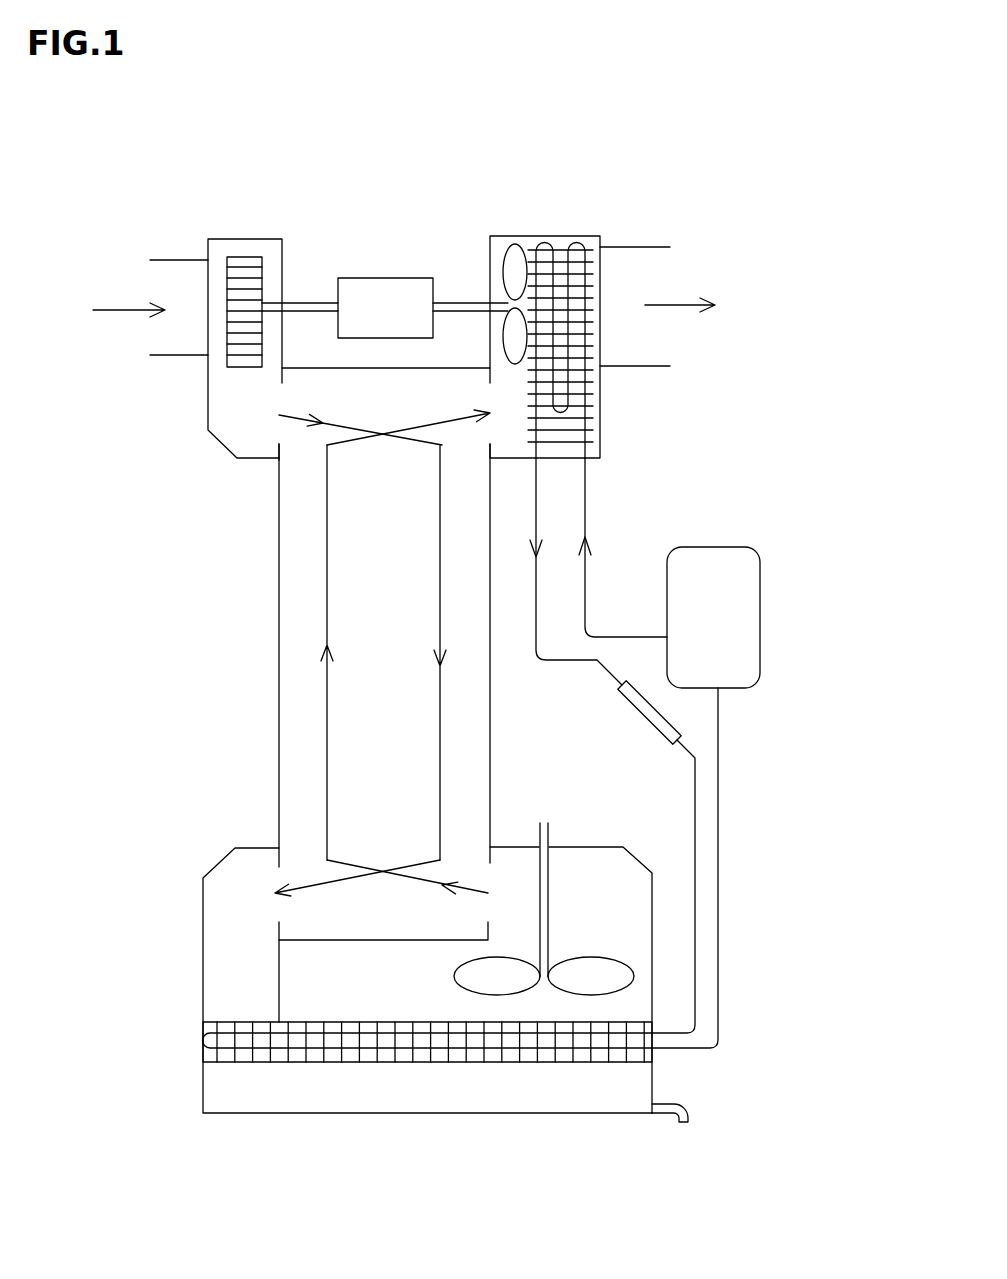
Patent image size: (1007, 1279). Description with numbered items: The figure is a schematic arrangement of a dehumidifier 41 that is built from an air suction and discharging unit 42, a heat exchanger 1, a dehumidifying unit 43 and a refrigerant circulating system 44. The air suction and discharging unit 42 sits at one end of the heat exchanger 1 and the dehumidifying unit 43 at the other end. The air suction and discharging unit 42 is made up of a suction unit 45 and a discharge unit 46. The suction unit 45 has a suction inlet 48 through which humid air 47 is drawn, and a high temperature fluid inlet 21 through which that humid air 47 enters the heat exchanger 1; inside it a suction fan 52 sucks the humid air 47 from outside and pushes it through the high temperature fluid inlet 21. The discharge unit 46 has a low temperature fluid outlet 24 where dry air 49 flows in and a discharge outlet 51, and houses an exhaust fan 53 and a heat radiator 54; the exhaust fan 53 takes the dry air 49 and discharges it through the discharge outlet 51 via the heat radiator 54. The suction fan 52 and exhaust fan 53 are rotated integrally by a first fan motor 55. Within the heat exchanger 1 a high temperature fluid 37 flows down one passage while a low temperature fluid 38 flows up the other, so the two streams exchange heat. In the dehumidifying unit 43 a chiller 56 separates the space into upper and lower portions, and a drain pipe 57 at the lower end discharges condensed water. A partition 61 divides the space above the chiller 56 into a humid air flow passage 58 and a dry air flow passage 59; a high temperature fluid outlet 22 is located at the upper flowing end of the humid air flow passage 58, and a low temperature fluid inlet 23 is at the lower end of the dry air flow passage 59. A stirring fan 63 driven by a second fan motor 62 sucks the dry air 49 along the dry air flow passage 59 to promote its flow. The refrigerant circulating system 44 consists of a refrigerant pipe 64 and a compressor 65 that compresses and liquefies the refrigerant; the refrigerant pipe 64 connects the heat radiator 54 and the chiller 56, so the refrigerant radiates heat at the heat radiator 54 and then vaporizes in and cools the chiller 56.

The heat exchanger 1 is at (279, 606).
The high temperature fluid inlet 21 is at (280, 427).
The high temperature fluid outlet 22 is at (273, 878).
The low temperature fluid inlet 23 is at (487, 878).
The low temperature fluid outlet 24 is at (490, 423).
The high temperature fluid 37 is at (440, 765).
The low temperature fluid 38 is at (327, 507).
The dehumidifier 41 is at (116, 199).
The air suction and discharging unit 42 is at (194, 448).
The dehumidifying unit 43 is at (199, 858).
The refrigerant circulating system 44 is at (734, 877).
The suction unit 45 is at (297, 262).
The discharge unit 46 is at (589, 226).
The humid air 47 is at (123, 308).
The suction inlet 48 is at (152, 357).
The dry air 49 is at (665, 303).
The discharge outlet 51 is at (665, 366).
The suction fan 52 is at (247, 257).
The exhaust fan 53 is at (515, 246).
The heat radiator 54 is at (592, 428).
The first fan motor 55 is at (395, 278).
The chiller 56 is at (223, 1020).
The drain pipe 57 is at (683, 1103).
The humid air flow passage 58 is at (230, 922).
The dry air flow passage 59 is at (597, 874).
The partition 61 is at (275, 975).
The second fan motor 62 is at (576, 772).
The stirring fan 63 is at (580, 957).
The refrigerant pipe 64 is at (585, 502).
The compressor 65 is at (727, 547).